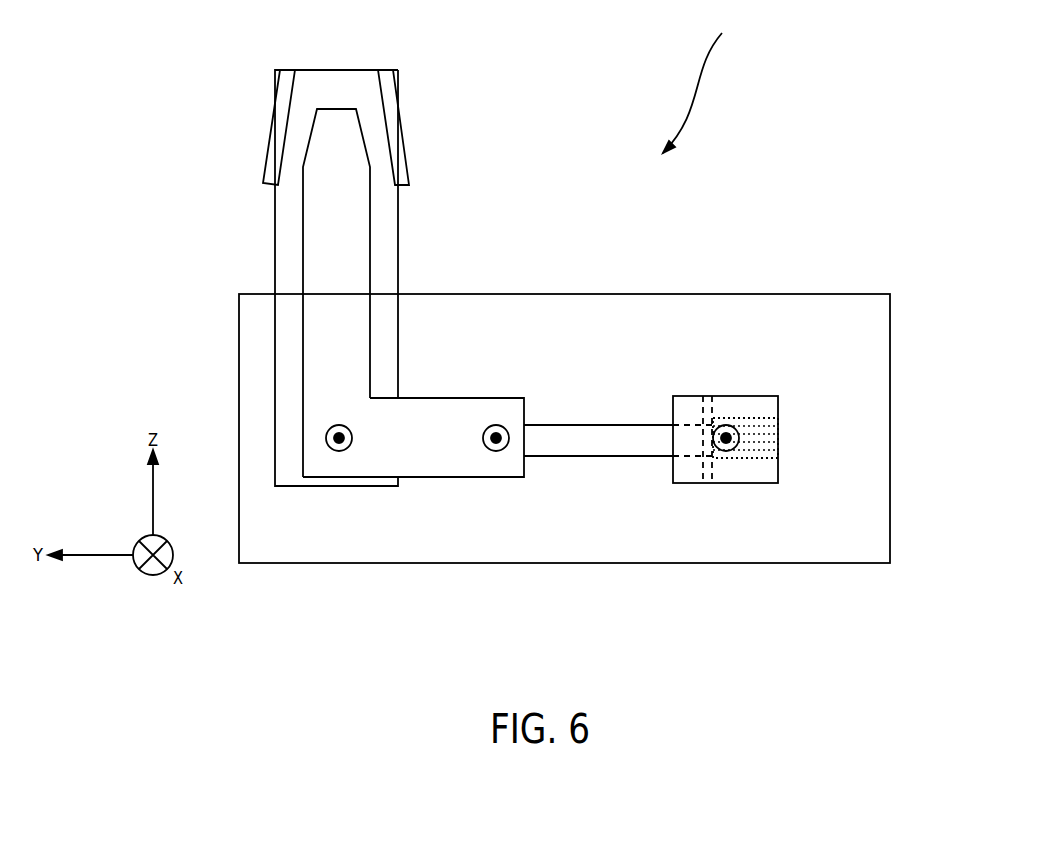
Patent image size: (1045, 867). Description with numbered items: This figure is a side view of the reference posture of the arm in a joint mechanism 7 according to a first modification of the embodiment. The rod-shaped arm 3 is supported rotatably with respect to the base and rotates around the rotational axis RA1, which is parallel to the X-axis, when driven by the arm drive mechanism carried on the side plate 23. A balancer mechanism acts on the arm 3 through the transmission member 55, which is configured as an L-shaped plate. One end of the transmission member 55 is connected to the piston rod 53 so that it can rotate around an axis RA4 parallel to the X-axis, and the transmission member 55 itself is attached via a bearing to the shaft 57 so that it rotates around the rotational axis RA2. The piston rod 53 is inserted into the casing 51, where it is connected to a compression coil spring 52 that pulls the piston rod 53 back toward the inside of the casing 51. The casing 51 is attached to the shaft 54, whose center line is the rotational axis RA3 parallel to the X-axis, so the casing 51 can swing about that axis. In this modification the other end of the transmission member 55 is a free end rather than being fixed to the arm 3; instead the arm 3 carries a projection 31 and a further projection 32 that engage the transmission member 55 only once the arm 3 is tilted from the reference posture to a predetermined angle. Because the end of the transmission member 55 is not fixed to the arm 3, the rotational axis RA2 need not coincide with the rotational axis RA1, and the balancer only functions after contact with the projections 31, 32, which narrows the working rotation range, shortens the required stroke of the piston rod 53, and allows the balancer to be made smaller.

The arm 3 is at (338, 253).
The joint mechanism 7 is at (703, 82).
The side plate 23 is at (873, 294).
The projection 31 is at (279, 130).
The second finger 32 is at (396, 130).
The casing 51 is at (758, 418).
The compression coil spring 52 is at (778, 436).
The piston rod 53 is at (571, 440).
The shaft 54 is at (738, 446).
The transmission member 55 is at (303, 243).
The shaft 57 is at (330, 446).
The rotational axis RA1 is at (415, 336).
The rotational axis RA2 is at (348, 432).
The rotational axis RA3 is at (721, 425).
The axis RA4 is at (497, 426).